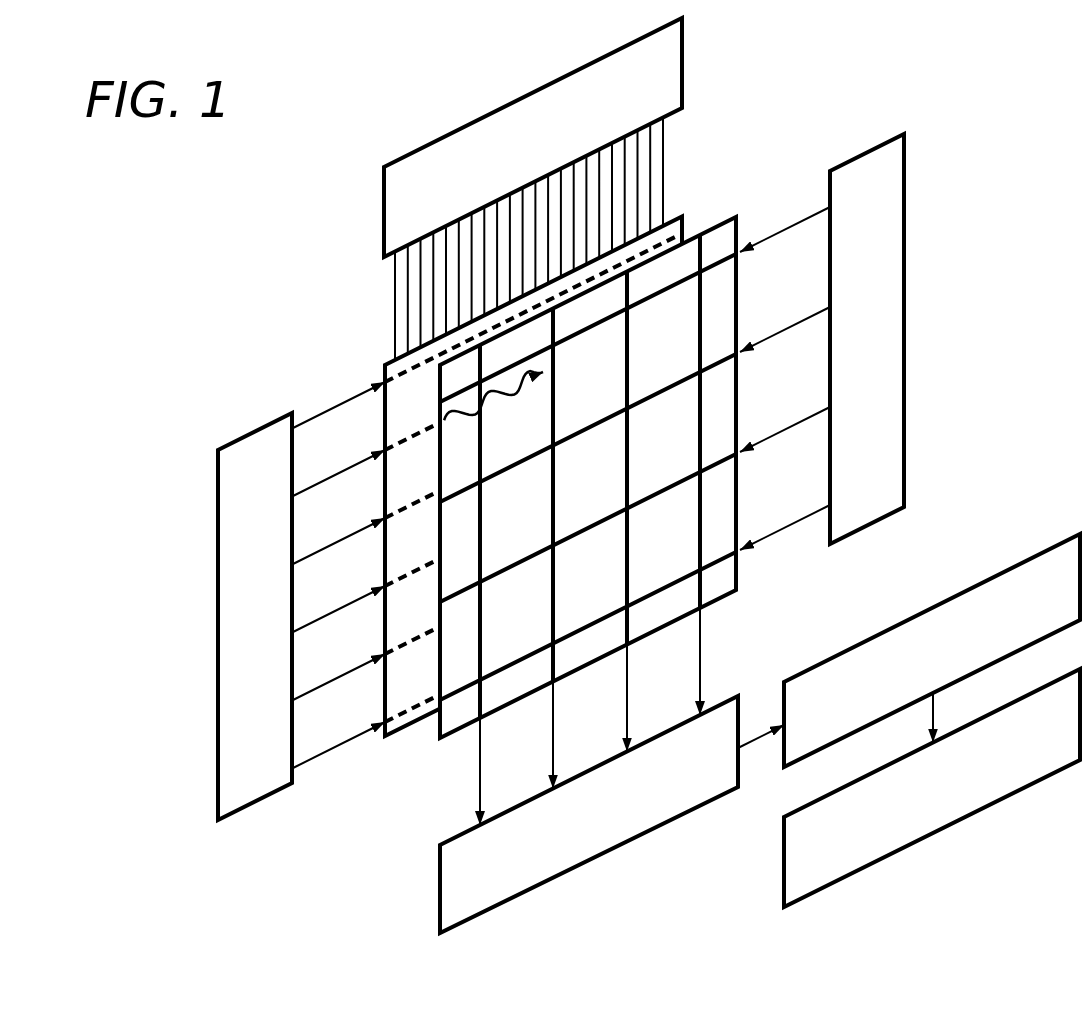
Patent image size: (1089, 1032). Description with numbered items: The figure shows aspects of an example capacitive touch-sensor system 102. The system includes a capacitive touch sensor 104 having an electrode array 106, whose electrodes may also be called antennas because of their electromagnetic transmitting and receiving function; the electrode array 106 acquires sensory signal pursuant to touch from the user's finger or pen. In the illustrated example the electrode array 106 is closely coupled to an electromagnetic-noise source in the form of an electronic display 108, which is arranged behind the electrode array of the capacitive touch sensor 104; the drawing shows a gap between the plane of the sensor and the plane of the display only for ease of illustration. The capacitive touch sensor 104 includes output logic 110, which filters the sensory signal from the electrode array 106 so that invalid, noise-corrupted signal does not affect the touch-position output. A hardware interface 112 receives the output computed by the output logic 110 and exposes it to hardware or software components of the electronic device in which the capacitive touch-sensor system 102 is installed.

The capacitive touch-sensor system 102 is at (1027, 152).
The capacitive touch sensor 104 is at (455, 718).
The electrode array 106 is at (805, 620).
The electronic display 108 is at (385, 363).
The output logic 110 is at (932, 650).
The hardware interface 112 is at (932, 788).